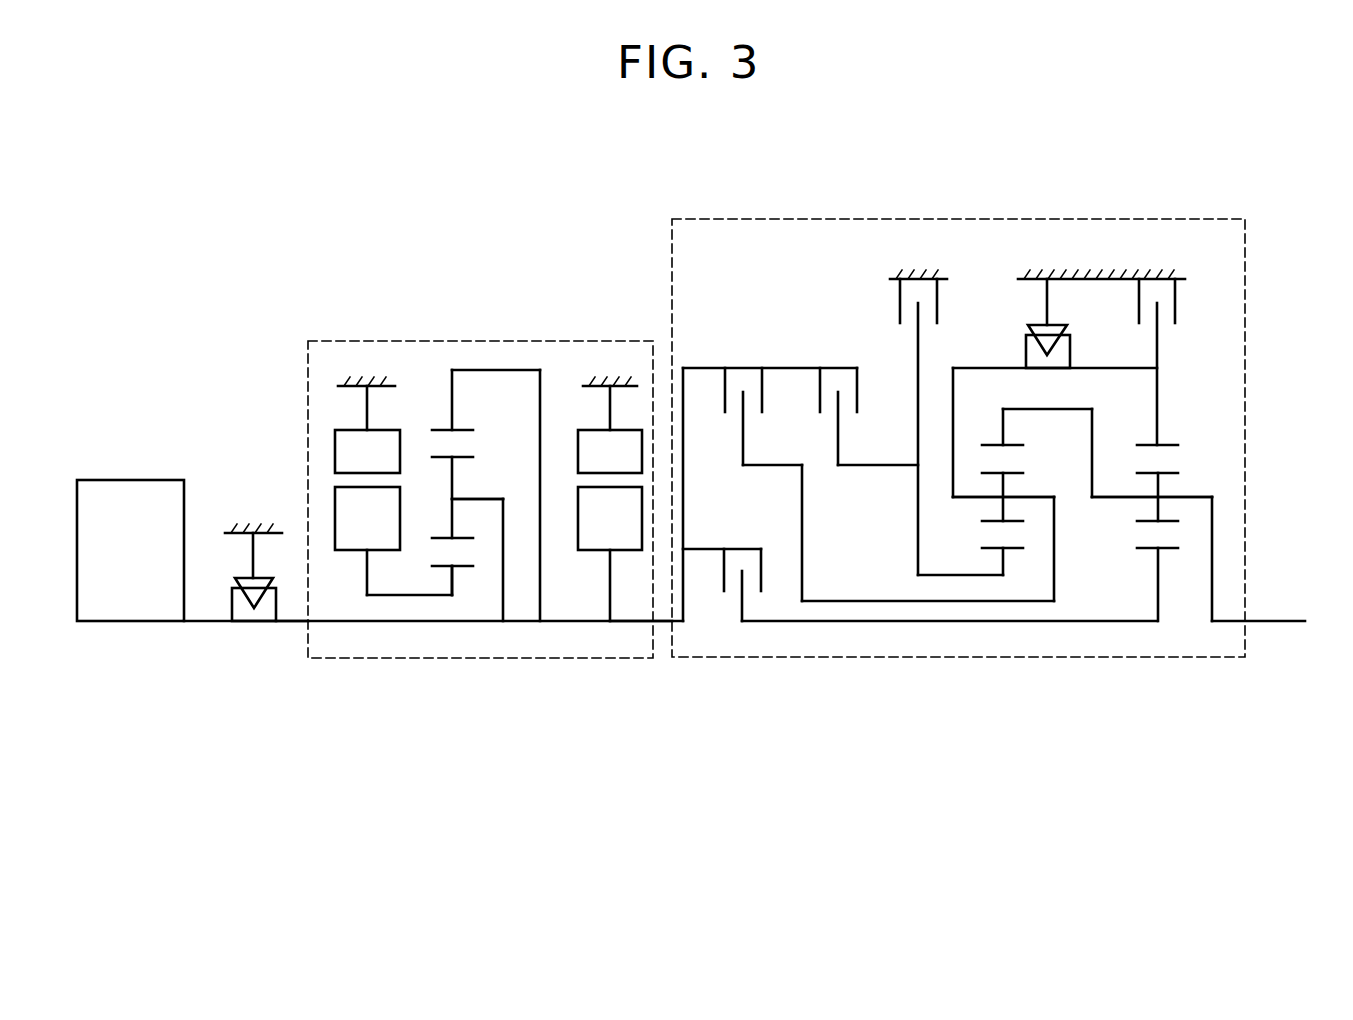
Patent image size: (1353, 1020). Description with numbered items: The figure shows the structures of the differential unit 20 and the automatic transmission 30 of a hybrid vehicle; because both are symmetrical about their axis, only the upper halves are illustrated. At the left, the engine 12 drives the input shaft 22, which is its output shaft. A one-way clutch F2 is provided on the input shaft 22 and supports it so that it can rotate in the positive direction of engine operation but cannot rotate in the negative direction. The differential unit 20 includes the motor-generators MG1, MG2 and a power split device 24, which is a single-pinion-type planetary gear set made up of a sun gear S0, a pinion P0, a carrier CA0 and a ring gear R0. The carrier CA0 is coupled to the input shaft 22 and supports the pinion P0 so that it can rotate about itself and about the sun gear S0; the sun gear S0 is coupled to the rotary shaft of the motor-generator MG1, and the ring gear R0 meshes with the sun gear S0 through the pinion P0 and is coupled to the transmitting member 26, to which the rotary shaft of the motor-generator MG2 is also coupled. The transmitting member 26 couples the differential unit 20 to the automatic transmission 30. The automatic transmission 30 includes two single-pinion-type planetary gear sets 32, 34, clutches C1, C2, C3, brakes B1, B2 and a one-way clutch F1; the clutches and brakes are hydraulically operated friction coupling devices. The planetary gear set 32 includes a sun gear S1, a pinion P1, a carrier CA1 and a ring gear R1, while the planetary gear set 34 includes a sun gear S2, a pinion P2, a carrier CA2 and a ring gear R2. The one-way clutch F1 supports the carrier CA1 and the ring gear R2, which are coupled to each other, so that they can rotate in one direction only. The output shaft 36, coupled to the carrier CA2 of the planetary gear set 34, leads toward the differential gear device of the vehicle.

The engine 12 is at (140, 479).
The differential unit 20 is at (587, 341).
The input shaft 22 is at (290, 622).
The power split device 24 is at (450, 632).
The transmitting member 26 is at (635, 622).
The automatic transmission 30 is at (1185, 218).
The planetary gear set 32 is at (1012, 630).
The planetary gear set 34 is at (1168, 630).
The output shaft 36 is at (1270, 618).
The motor-generator MG1 is at (348, 575).
The motor-generator MG2 is at (591, 575).
The one-way clutch F2 is at (253, 561).
The one-way clutch F1 is at (1101, 306).
The brake B1 is at (946, 408).
The brake B2 is at (1157, 344).
The clutch C1 is at (722, 572).
The clutch C2 is at (868, 482).
The clutch C3 is at (869, 404).
The ring gear R0 is at (463, 432).
The carrier CA0 is at (465, 498).
The pinion P0 is at (441, 537).
The sun gear S0 is at (468, 568).
The ring gear R1 is at (1017, 440).
The carrier CA1 is at (1017, 495).
The pinion P1 is at (988, 520).
The sun gear S1 is at (1013, 550).
The ring gear R2 is at (1170, 440).
The carrier CA2 is at (1172, 495).
The pinion P2 is at (1140, 520).
The sun gear S2 is at (1167, 550).